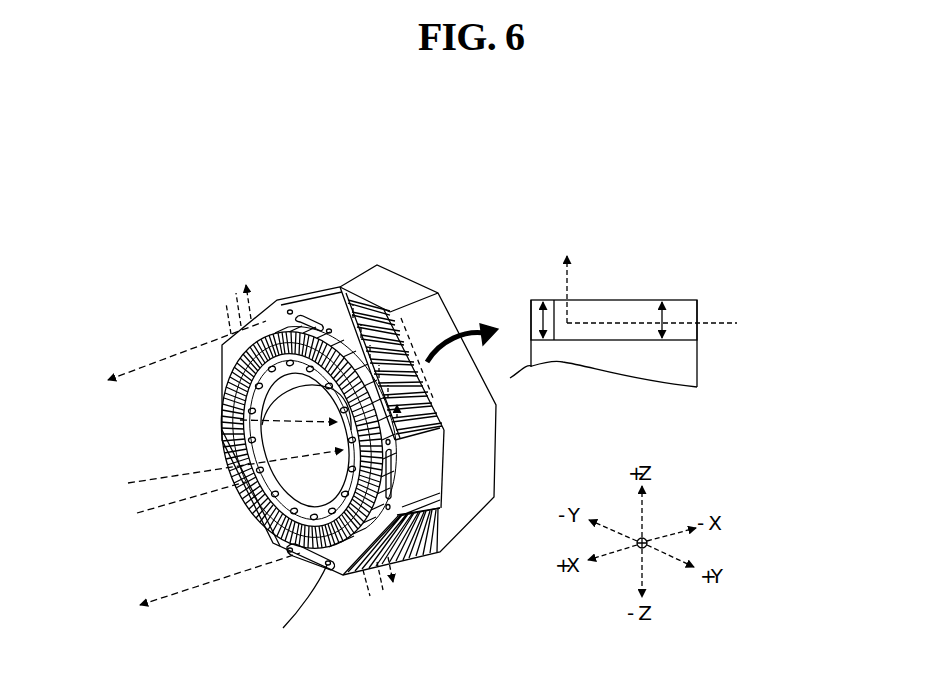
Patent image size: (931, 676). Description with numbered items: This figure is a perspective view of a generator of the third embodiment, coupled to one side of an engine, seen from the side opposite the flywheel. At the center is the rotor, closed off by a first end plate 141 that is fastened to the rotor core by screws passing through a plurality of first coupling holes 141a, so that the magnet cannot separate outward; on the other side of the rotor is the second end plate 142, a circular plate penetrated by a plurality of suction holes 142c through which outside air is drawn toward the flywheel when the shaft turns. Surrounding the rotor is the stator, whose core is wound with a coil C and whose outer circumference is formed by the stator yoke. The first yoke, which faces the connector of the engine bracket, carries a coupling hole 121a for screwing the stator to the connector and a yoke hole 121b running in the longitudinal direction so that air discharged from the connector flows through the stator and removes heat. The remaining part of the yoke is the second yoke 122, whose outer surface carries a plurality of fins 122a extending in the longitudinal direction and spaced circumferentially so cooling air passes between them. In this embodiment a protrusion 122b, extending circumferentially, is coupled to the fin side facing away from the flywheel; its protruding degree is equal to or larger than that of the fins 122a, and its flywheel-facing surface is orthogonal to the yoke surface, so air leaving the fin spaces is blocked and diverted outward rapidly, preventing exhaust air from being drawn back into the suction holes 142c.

The second yoke 122 is at (278, 318).
The fin 122a is at (380, 312).
The protrusion 122b is at (338, 318).
The coupling hole 121a is at (293, 553).
The yoke hole 121b is at (350, 580).
The second end plate 142 is at (222, 398).
The suction hole 142c is at (222, 416).
The first end plate 141 is at (263, 520).
The first coupling hole 141a is at (253, 500).
The coil C is at (273, 533).